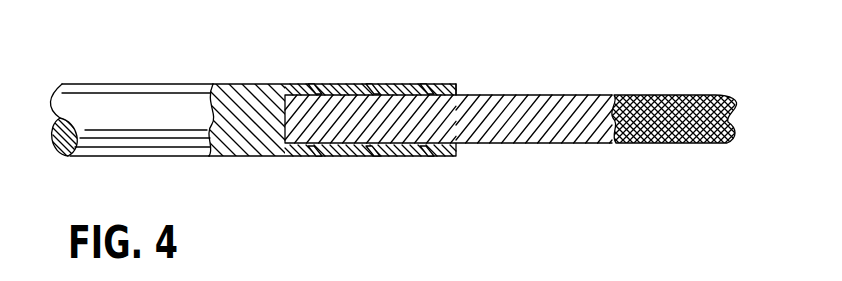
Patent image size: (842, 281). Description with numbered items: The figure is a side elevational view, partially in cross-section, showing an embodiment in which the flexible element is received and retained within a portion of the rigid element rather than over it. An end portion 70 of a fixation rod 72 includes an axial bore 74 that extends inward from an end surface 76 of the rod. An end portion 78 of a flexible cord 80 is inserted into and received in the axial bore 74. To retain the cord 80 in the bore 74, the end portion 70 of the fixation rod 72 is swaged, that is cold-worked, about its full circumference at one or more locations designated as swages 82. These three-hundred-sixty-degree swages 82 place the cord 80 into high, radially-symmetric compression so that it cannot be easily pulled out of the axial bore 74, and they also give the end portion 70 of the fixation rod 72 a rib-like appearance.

The end portion of the fixation rod 70 is at (410, 85).
The fixation rod 72 is at (117, 81).
The axial bore 74 is at (396, 143).
The end surface 76 is at (458, 86).
The end portion of the flexible cord 78 is at (342, 124).
The flexible cord 80 is at (659, 91).
The swages 82 is at (372, 85).